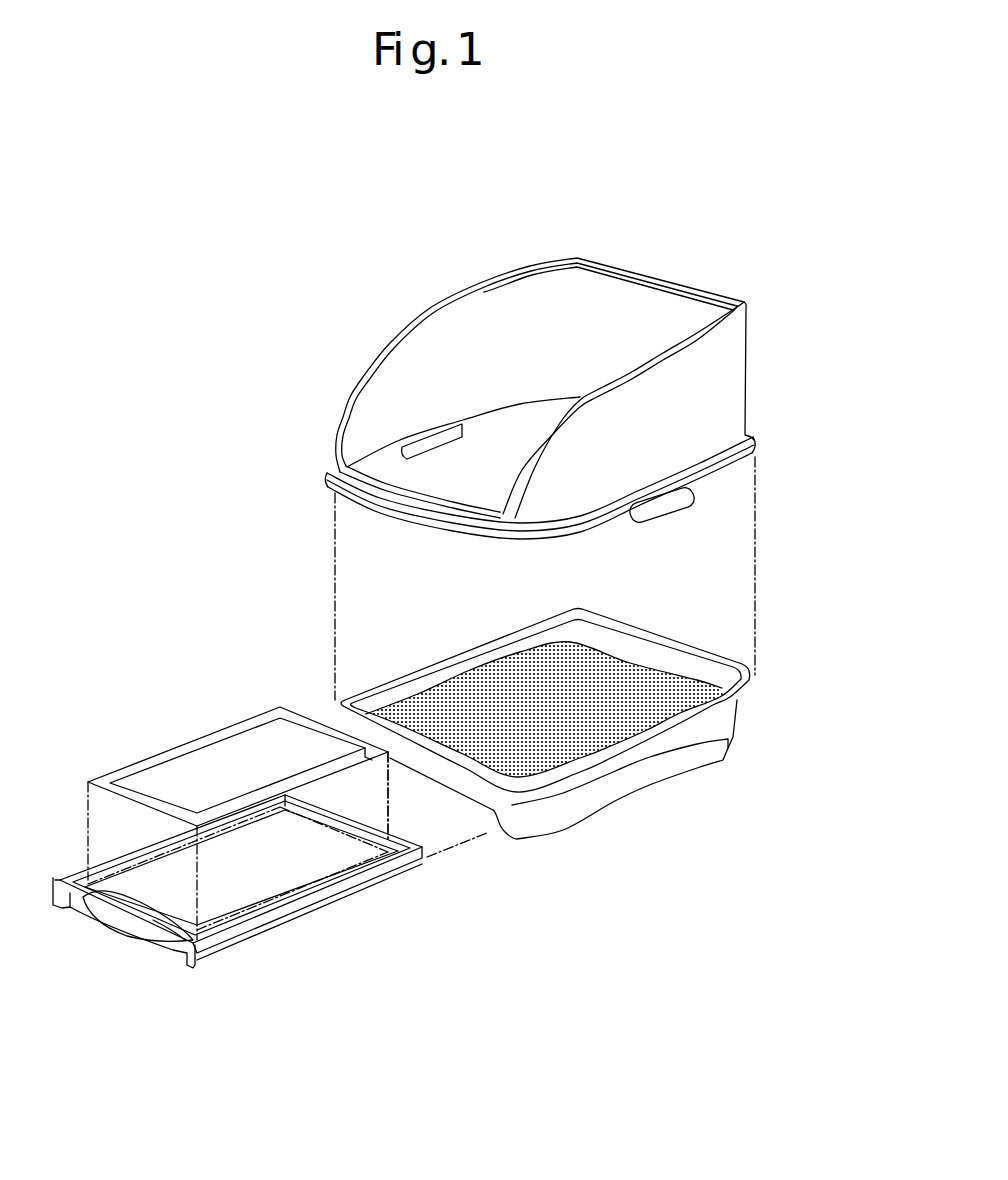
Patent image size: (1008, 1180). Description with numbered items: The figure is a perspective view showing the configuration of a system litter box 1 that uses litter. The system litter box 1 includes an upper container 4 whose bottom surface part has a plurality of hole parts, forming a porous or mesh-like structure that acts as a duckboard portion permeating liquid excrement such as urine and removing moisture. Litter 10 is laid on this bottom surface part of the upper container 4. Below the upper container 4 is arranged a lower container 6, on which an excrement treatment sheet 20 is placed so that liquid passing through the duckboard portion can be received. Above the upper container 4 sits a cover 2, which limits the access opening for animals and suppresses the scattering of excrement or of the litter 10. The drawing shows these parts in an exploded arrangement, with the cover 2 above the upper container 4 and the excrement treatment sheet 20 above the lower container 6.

The system litter box 1 is at (793, 300).
The cover 2 is at (340, 382).
The upper container 4 is at (632, 772).
The litter 10 is at (507, 660).
The excrement treatment sheet 20 is at (168, 738).
The lower container 6 is at (317, 920).